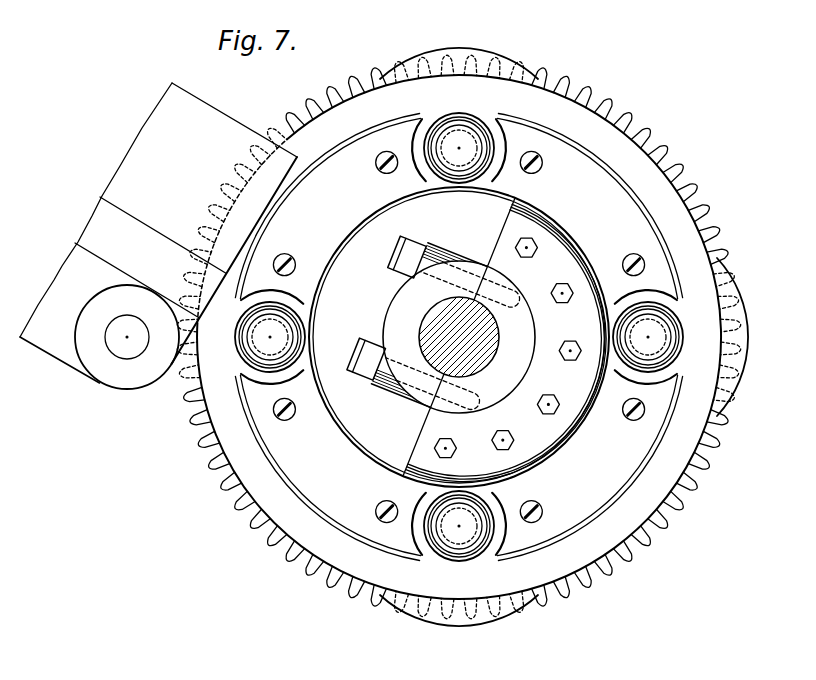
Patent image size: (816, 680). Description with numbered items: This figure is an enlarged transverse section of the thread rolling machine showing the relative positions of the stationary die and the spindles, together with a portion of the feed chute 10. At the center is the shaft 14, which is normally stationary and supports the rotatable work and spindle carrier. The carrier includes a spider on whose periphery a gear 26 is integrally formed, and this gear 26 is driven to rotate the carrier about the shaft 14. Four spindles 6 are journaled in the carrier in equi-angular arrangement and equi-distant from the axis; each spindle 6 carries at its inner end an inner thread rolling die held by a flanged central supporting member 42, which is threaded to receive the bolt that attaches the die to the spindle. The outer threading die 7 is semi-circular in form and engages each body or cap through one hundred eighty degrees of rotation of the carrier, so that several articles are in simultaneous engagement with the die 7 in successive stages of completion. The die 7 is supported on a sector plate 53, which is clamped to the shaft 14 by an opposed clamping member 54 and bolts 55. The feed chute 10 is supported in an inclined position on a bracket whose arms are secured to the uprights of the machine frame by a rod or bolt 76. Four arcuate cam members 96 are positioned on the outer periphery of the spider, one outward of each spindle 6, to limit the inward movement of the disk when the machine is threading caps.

The spindle 6 is at (465, 114).
The stationary thread rolling die 7 is at (580, 243).
The feed chute 10 is at (158, 233).
The shaft 14 is at (430, 317).
The gear 26 is at (695, 495).
The central supporting member 42 is at (477, 140).
The sector plate 53 is at (534, 376).
The clamping member 54 is at (402, 290).
The bolt 55 is at (415, 235).
The rod or bolt 76 is at (127, 355).
The arcuate cam member 96 is at (452, 47).